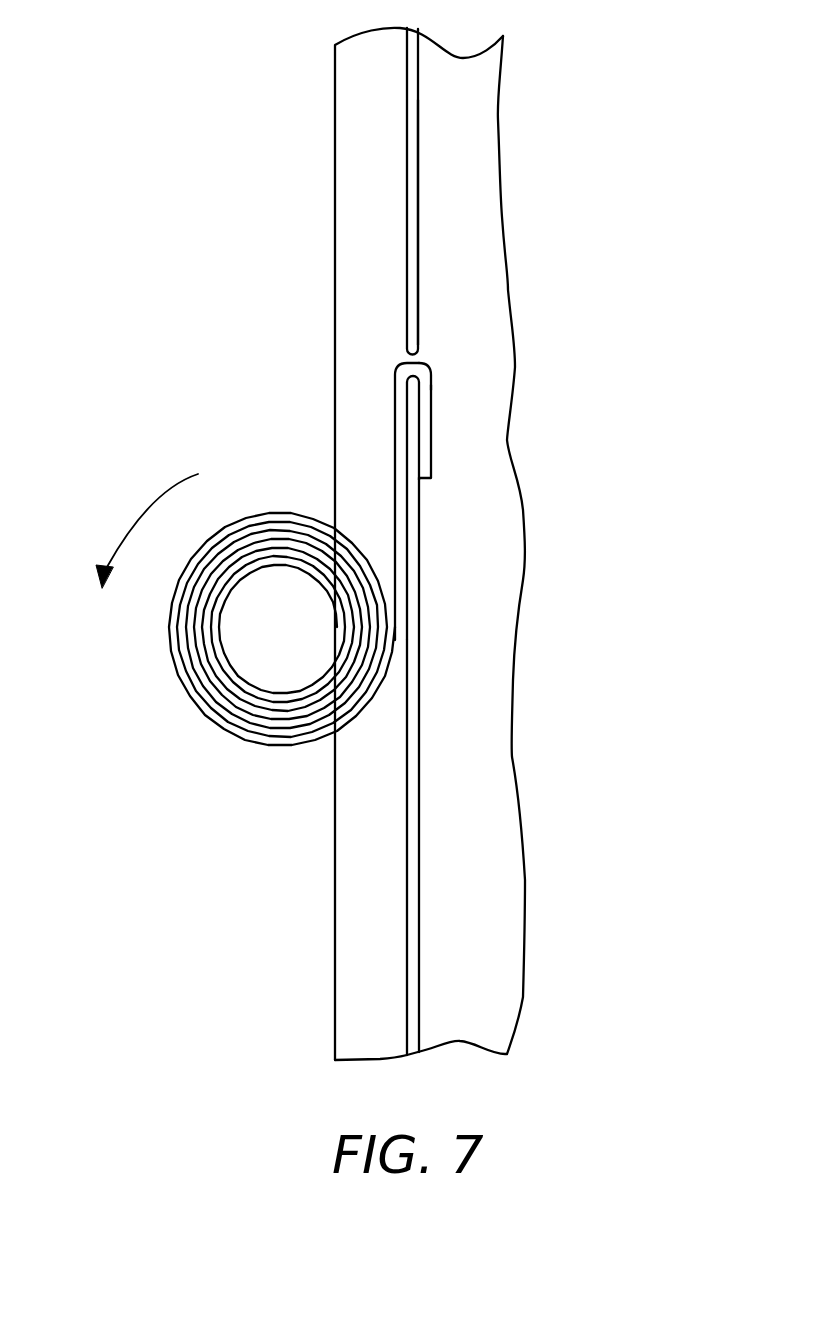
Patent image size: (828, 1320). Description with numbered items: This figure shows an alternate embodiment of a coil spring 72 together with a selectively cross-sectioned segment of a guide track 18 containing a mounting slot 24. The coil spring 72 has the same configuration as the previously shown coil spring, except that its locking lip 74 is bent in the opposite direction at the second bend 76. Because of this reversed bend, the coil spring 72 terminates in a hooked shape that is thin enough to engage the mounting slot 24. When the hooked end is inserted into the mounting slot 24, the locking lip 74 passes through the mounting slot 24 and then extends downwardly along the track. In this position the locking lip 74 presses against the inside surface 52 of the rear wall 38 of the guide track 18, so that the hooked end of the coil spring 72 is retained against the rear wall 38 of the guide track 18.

The guide track 18 is at (365, 157).
The rear wall 38 is at (412, 137).
The inside surface 52 is at (422, 250).
The mounting slot 24 is at (423, 368).
The second bend 76 is at (428, 375).
The locking lip 74 is at (432, 428).
The coil spring 72 is at (243, 743).